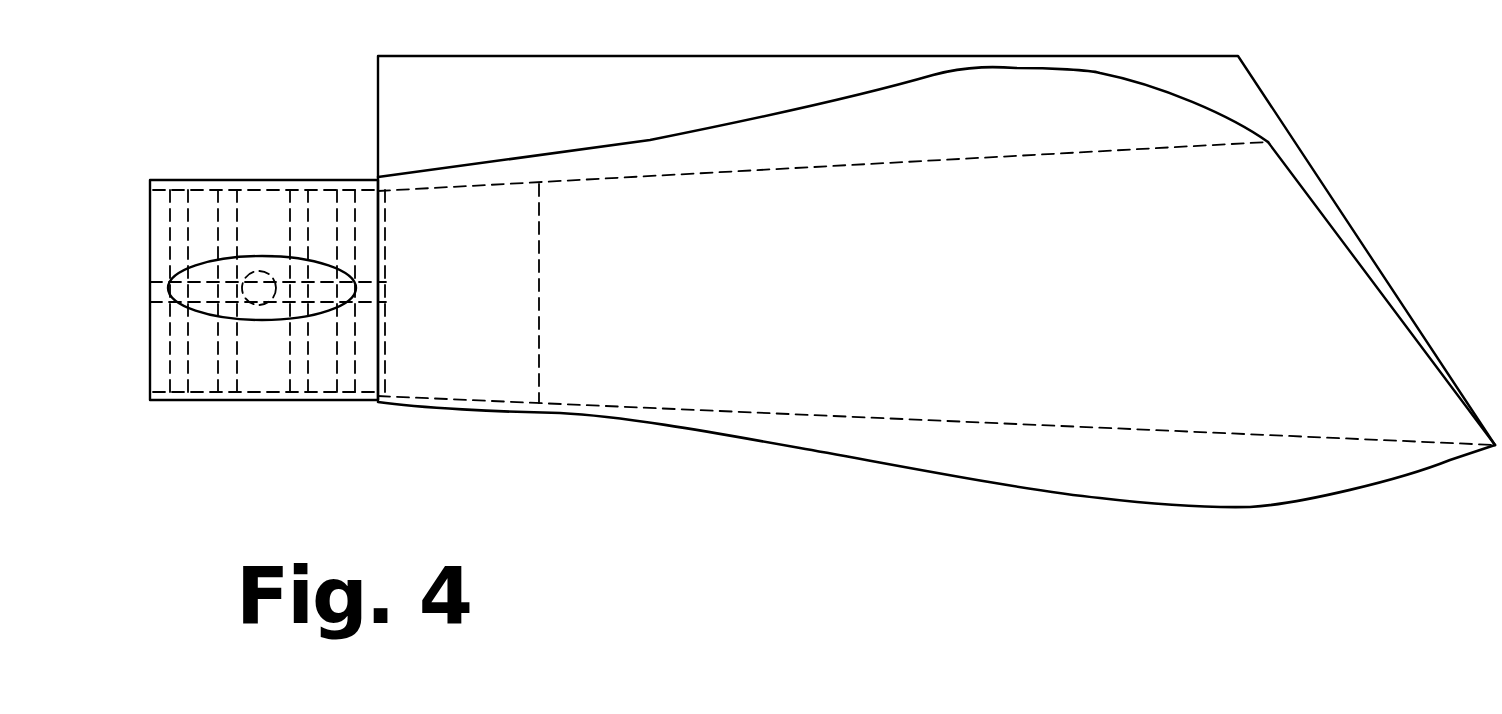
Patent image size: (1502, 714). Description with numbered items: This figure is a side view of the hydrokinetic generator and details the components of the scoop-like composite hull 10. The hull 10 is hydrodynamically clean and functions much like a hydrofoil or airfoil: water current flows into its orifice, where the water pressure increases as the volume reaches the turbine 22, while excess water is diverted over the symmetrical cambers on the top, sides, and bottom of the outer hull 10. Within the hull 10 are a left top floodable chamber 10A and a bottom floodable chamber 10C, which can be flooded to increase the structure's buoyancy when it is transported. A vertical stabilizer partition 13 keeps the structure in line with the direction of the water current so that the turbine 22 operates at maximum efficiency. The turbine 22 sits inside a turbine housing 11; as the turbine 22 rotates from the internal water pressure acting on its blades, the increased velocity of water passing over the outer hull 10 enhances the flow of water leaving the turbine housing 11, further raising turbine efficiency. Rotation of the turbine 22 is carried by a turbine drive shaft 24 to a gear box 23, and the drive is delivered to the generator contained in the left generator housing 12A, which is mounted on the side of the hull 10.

The scoop-like composite hull 10 is at (936, 261).
The left top floodable chamber 10A is at (1078, 129).
The bottom floodable chamber 10C is at (1205, 485).
The turbine housing 11 is at (200, 178).
The left generator housing 12A is at (232, 312).
The vertical stabilizer partition 13 is at (502, 116).
The turbine 22 is at (300, 205).
The gear box 23 is at (260, 293).
The turbine drive shaft 24 is at (373, 298).